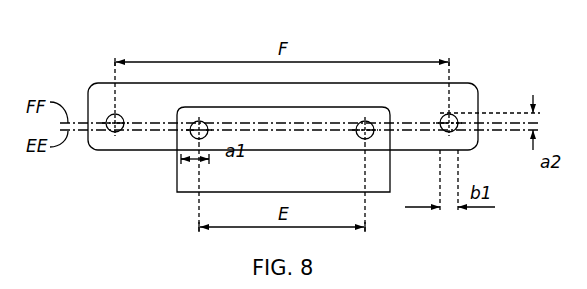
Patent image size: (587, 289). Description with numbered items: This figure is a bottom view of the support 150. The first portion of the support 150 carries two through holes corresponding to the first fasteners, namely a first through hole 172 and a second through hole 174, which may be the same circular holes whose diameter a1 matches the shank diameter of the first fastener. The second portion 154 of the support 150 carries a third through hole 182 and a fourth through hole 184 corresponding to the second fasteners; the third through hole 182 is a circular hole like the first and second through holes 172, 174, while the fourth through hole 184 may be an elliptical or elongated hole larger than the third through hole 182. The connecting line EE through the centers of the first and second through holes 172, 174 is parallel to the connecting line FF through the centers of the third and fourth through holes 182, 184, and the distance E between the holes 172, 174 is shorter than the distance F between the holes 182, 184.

The support 150 is at (512, 36).
The second portion 154 is at (330, 98).
The first through hole 172 is at (193, 138).
The second through hole 174 is at (371, 139).
The third through hole 182 is at (114, 116).
The fourth through hole 184 is at (452, 114).